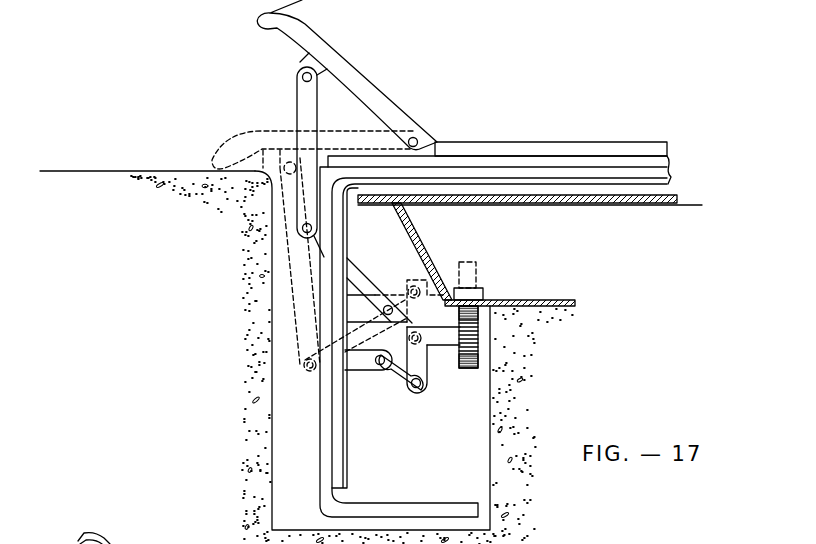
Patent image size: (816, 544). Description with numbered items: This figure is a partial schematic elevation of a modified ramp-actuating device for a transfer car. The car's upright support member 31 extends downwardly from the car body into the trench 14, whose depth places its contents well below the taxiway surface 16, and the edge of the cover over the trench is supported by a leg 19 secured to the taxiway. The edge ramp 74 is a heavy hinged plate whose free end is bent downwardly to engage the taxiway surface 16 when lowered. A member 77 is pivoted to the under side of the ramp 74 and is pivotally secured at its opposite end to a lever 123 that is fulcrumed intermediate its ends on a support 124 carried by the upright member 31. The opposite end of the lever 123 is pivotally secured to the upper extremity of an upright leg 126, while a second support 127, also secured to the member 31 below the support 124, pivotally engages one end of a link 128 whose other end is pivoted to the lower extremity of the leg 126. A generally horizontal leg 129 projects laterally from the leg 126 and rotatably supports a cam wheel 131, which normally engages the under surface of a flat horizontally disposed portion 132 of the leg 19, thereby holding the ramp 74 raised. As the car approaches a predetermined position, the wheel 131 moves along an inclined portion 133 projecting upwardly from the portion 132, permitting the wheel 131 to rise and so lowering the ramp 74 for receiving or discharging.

The trench 14 is at (286, 432).
The taxiway surface 16 is at (72, 171).
The leg 19 is at (415, 228).
The upright support member 31 is at (338, 274).
The edge ramp 74 is at (277, 25).
The member 77 is at (303, 99).
The lever 123 is at (356, 270).
The support 124 is at (375, 309).
The upright leg 126 is at (422, 363).
The second support 127 is at (361, 368).
The link 128 is at (401, 374).
The horizontal leg 129 is at (438, 338).
The cam wheel 131 is at (476, 335).
The flat horizontally disposed portion 132 is at (482, 300).
The inclined portion 133 is at (477, 290).